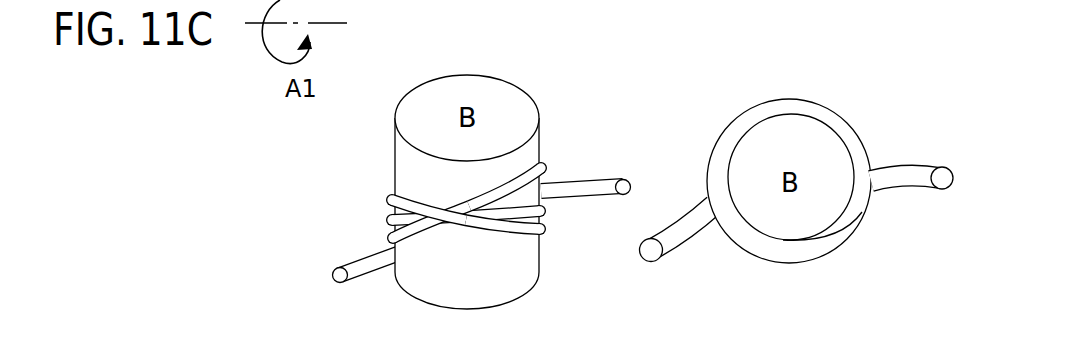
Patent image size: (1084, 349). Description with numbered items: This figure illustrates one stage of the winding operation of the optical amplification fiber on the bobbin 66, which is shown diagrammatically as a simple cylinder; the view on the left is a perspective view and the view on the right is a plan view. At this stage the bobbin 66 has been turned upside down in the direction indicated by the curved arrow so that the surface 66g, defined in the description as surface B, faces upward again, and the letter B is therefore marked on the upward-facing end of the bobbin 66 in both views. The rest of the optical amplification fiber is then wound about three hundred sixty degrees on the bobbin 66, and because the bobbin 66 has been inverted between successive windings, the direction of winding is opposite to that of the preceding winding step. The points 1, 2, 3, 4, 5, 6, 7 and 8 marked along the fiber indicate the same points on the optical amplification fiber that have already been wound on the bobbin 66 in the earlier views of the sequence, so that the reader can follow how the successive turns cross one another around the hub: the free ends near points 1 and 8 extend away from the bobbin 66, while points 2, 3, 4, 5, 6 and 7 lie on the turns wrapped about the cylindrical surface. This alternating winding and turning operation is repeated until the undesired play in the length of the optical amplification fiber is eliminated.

The point on the optical amplification fiber 1 is at (747, 185).
The point on the optical amplification fiber 2 is at (388, 220).
The point on the optical amplification fiber 3 is at (512, 211).
The point on the optical amplification fiber 4 is at (388, 238).
The point on the optical amplification fiber 5 is at (666, 179).
The point on the optical amplification fiber 6 is at (385, 199).
The point on the optical amplification fiber 7 is at (664, 238).
The point on the optical amplification fiber 8 is at (524, 244).
The bobbin 66 is at (545, 266).
The surface of the flange 66g is at (525, 118).